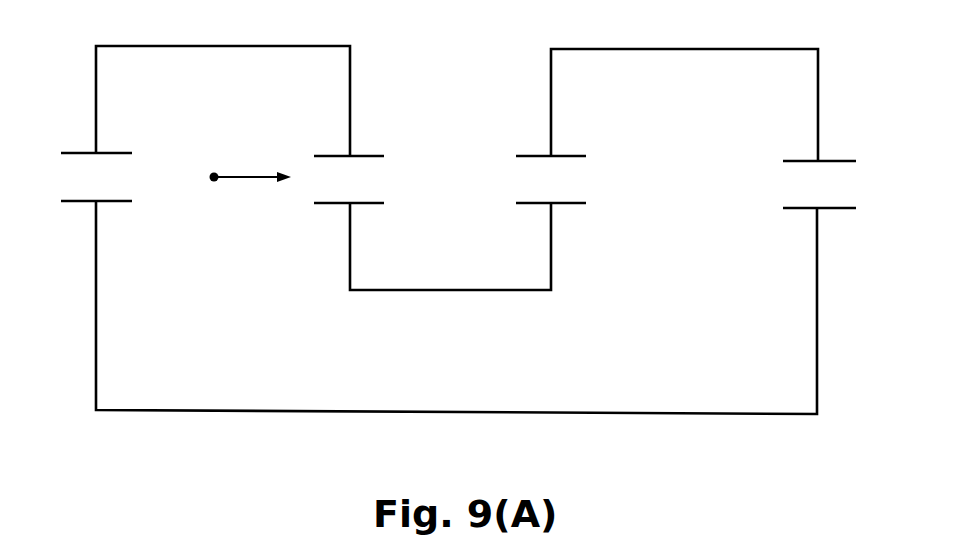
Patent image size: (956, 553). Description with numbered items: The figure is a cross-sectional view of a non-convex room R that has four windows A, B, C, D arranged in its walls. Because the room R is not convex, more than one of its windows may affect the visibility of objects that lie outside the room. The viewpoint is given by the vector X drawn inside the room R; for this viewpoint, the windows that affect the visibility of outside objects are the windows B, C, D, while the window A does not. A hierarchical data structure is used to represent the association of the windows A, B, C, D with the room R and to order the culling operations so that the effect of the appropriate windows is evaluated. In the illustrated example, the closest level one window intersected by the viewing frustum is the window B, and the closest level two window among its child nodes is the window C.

The window A is at (80, 203).
The window B is at (358, 154).
The window C is at (533, 154).
The window D is at (837, 159).
The viewpoint vector X is at (214, 180).
The non-convex room R is at (485, 416).